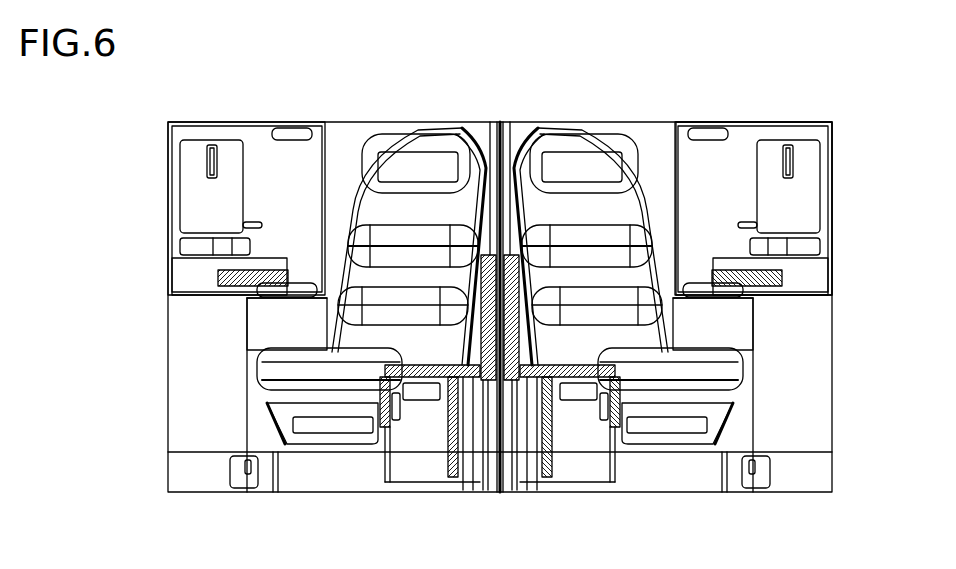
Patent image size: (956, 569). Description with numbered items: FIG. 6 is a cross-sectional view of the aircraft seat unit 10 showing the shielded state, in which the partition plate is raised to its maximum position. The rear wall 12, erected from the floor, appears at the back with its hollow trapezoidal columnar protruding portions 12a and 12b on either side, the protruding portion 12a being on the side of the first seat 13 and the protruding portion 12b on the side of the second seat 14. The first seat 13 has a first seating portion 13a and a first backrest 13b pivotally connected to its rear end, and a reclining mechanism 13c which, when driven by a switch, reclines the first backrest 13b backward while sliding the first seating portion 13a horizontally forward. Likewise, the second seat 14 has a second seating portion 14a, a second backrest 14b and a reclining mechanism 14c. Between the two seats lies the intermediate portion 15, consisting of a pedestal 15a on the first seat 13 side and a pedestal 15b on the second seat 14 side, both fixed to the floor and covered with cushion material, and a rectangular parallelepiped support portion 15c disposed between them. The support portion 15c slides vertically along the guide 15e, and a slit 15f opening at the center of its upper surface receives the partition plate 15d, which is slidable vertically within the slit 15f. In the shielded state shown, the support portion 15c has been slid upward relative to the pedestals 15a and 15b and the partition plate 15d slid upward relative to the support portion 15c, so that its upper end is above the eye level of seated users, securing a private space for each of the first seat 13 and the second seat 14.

The aircraft seat unit 10 is at (708, 120).
The rear wall 12 is at (833, 120).
The protruding portion 12a is at (185, 315).
The protruding portion 12b is at (815, 315).
The first seat 13 is at (285, 293).
The first seating portion 13a is at (267, 372).
The first backrest 13b is at (340, 197).
The reclining mechanism 13c is at (345, 410).
The second seat 14 is at (707, 293).
The second seating portion 14a is at (723, 370).
The second backrest 14b is at (605, 213).
The reclining mechanism 14c is at (652, 407).
The intermediate portion 15 is at (502, 308).
The pedestal 15a is at (345, 330).
The pedestal 15b is at (645, 333).
The support portion 15c is at (507, 455).
The partition plate 15d is at (497, 120).
The guide 15e is at (480, 470).
The slit 15f is at (478, 302).